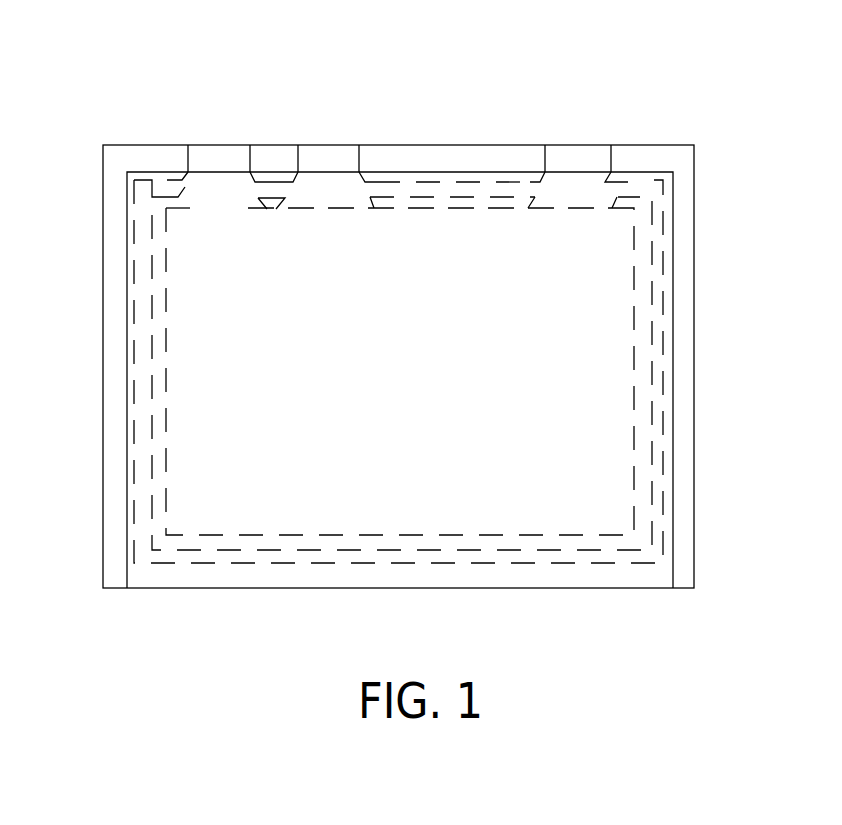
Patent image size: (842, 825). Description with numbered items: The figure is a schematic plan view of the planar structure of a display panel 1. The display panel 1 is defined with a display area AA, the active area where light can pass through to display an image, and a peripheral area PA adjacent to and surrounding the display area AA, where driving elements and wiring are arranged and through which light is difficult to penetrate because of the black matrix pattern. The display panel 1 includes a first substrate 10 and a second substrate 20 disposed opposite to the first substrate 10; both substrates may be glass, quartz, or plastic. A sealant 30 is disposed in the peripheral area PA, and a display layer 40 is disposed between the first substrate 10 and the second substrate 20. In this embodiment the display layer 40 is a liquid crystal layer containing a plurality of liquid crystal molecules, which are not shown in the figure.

The display panel 1 is at (400, 336).
The first substrate 10 is at (615, 589).
The second substrate 20 is at (631, 171).
The sealant 30 is at (137, 224).
The display layer 40 is at (633, 445).
The peripheral area PA is at (440, 338).
The display area AA is at (458, 373).